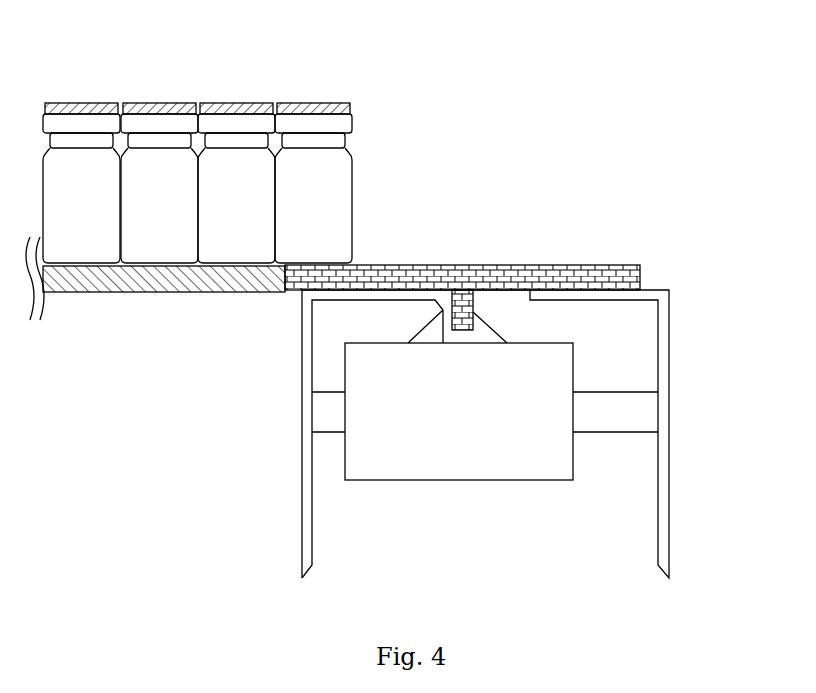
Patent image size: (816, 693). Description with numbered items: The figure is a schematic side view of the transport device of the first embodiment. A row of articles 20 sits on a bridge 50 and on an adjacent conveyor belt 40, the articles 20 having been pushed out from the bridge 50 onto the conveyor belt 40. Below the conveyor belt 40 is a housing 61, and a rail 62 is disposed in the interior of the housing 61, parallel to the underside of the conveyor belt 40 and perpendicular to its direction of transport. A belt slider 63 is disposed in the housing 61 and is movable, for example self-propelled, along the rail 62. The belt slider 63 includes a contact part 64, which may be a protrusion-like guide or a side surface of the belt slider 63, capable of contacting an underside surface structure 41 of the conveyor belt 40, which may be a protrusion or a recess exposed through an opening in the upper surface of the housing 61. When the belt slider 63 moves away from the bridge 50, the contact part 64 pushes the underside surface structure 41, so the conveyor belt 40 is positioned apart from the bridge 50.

The articles 20 is at (332, 101).
The bridge 50 is at (97, 293).
The conveyor belt 40 is at (618, 262).
The underside surface structure 41 is at (470, 290).
The housing 61 is at (670, 535).
The rail 62 is at (332, 420).
The belt slider 63 is at (408, 470).
The contact part 64 is at (430, 325).